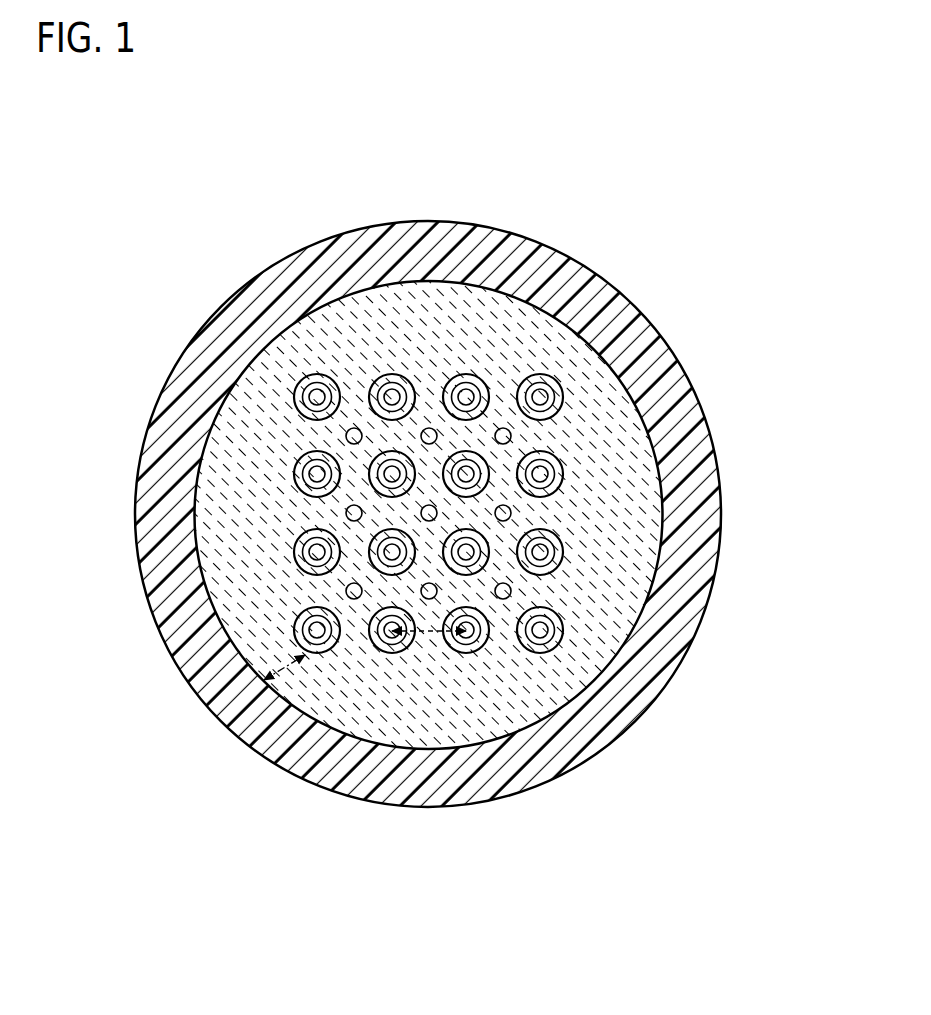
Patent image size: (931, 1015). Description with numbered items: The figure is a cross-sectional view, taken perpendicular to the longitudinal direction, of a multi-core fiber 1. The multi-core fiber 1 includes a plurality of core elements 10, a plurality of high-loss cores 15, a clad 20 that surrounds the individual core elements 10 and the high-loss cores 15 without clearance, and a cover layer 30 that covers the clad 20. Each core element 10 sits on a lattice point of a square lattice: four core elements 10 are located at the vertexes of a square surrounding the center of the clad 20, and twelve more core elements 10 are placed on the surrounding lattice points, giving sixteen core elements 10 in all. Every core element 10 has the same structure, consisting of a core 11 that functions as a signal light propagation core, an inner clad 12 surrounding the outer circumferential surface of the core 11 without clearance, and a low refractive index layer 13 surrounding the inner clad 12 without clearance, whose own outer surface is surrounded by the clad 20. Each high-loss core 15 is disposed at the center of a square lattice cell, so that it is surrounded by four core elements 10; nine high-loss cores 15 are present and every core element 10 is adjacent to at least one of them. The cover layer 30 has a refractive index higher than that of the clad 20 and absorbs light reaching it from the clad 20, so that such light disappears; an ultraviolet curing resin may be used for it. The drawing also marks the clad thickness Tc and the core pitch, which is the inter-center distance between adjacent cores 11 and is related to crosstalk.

The multi-core fiber 1 is at (748, 160).
The core element 10 is at (420, 504).
The core 11 is at (466, 392).
The inner clad 12 is at (478, 392).
The low refractive index layer 13 is at (453, 407).
The high-loss core 15 is at (345, 433).
The clad 20 is at (366, 310).
The cover layer 30 is at (700, 455).
The clad thickness Tc is at (263, 680).